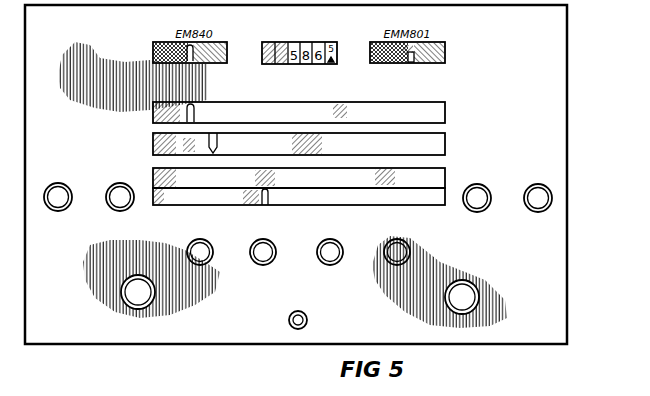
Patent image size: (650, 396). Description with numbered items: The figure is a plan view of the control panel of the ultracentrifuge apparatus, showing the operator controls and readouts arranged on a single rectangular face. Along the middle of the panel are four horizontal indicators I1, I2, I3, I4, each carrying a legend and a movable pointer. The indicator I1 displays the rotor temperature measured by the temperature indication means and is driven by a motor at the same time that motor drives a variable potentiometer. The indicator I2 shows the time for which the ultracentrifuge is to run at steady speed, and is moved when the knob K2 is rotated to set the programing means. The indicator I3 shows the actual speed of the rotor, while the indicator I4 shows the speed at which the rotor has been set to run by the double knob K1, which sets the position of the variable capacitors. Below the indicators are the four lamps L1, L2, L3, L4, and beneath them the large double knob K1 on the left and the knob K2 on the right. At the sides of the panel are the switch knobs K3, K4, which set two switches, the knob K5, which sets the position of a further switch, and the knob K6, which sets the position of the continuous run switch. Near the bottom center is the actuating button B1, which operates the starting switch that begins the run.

The indicator I1 is at (153, 115).
The indicator I2 is at (153, 145).
The indicator I3 is at (153, 173).
The indicator I4 is at (153, 191).
The double knob K1 is at (156, 290).
The knob K2 is at (478, 303).
The switch knob K3 is at (63, 210).
The switch knob K4 is at (125, 210).
The knob K5 is at (480, 212).
The knob K6 is at (544, 211).
The lamp L1 is at (205, 240).
The lamp L2 is at (268, 240).
The lamp L3 is at (335, 240).
The lamp L4 is at (402, 240).
The actuating button B1 is at (294, 312).